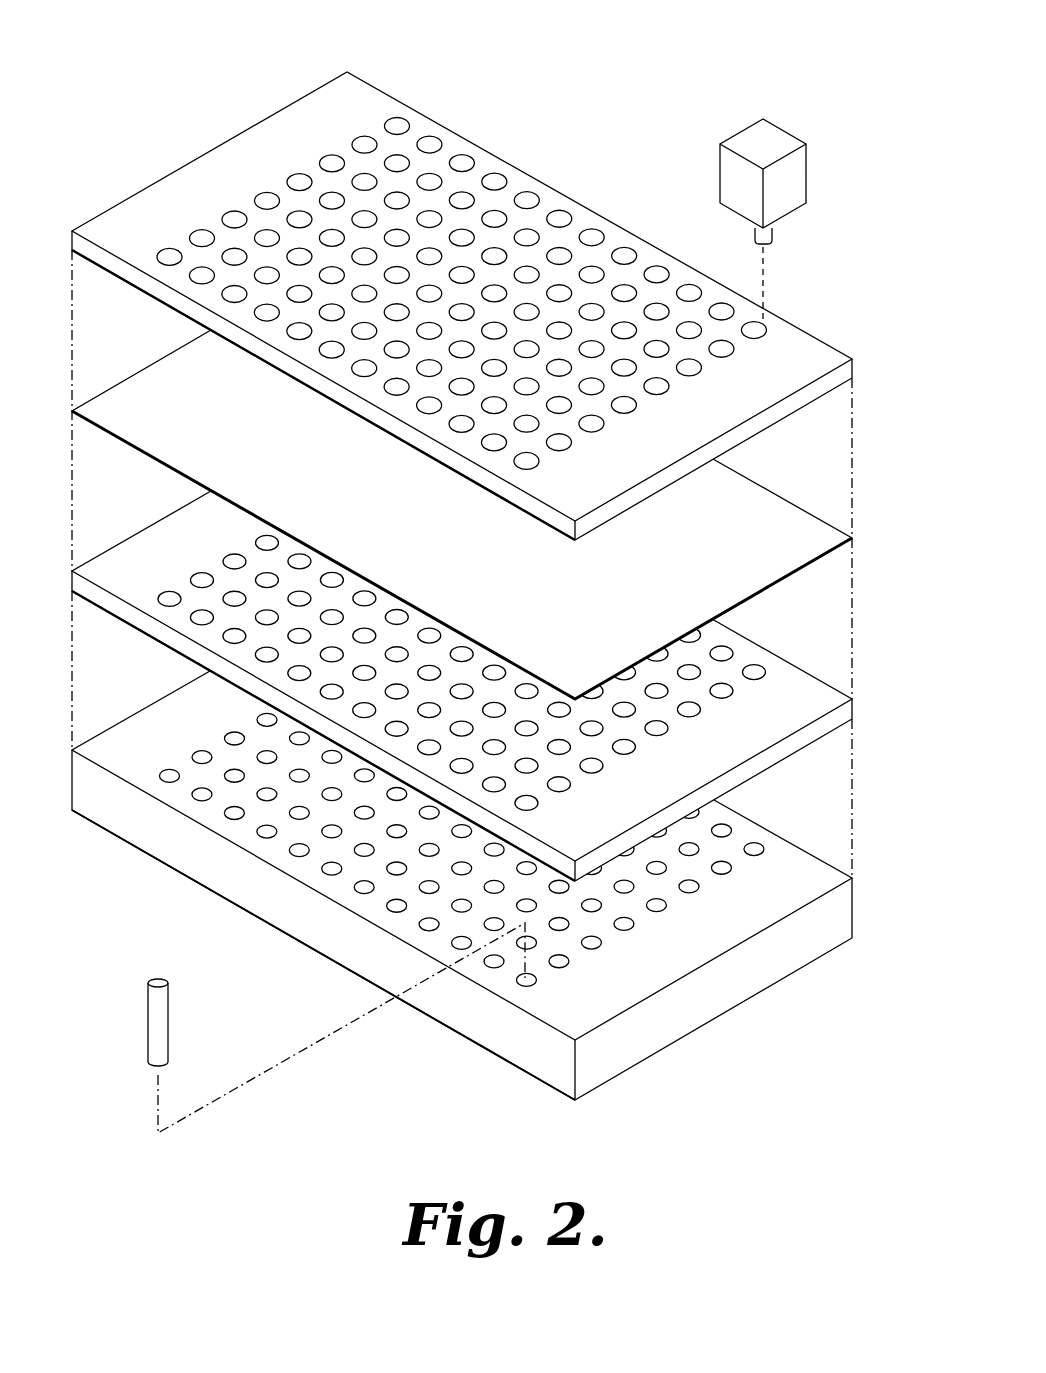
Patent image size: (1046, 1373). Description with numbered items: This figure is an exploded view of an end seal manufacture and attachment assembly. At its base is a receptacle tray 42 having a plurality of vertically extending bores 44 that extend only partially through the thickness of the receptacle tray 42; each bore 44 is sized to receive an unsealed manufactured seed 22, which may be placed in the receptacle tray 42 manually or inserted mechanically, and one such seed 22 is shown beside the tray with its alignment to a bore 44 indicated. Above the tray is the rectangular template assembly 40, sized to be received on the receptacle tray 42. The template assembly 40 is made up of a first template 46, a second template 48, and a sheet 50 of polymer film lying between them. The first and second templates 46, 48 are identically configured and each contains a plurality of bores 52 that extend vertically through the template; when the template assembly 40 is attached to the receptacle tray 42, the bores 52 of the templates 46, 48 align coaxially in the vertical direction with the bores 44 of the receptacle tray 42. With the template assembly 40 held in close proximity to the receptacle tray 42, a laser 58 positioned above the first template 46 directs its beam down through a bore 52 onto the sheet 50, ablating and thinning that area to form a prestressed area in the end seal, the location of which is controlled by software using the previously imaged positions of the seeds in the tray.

The template assembly 40 is at (532, 122).
The first template 46 is at (292, 98).
The second template 48 is at (798, 662).
The receptacle tray 42 is at (732, 983).
The sheet 50 is at (134, 364).
The bores 52 is at (625, 252).
The bores 44 is at (757, 840).
The laser 58 is at (798, 176).
The manufactured seed 22 is at (142, 1016).